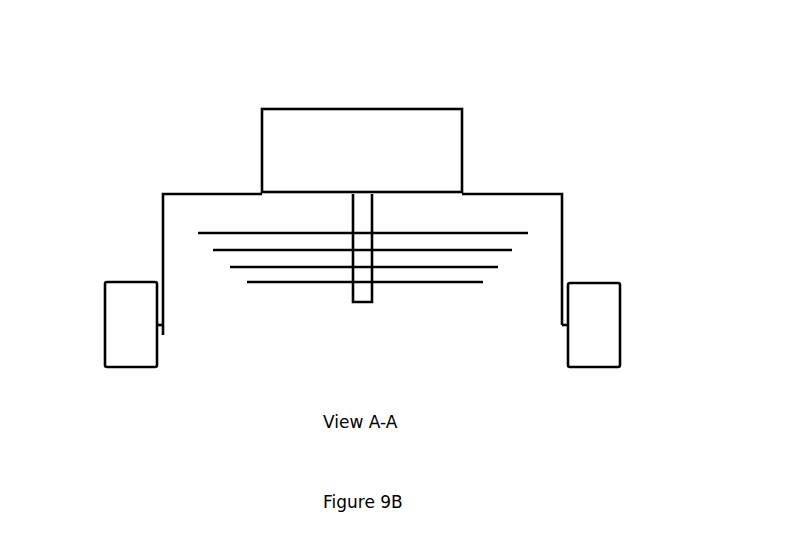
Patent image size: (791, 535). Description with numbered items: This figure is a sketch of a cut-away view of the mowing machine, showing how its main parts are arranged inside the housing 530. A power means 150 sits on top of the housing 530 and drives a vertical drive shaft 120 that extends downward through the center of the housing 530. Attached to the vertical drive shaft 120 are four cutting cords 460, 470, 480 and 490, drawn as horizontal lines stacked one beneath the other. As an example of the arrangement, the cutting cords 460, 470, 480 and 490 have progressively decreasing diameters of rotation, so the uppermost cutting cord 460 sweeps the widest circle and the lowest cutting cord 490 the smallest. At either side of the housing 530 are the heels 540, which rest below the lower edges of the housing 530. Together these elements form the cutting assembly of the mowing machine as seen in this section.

The power means 150 is at (320, 109).
The housing 530 is at (543, 193).
The vertical drive shaft 120 is at (358, 303).
The heels 540 is at (103, 278).
The cutting cord 460 is at (530, 237).
The cutting cord 470 is at (514, 252).
The cutting cord 480 is at (502, 270).
The cutting cord 490 is at (490, 288).